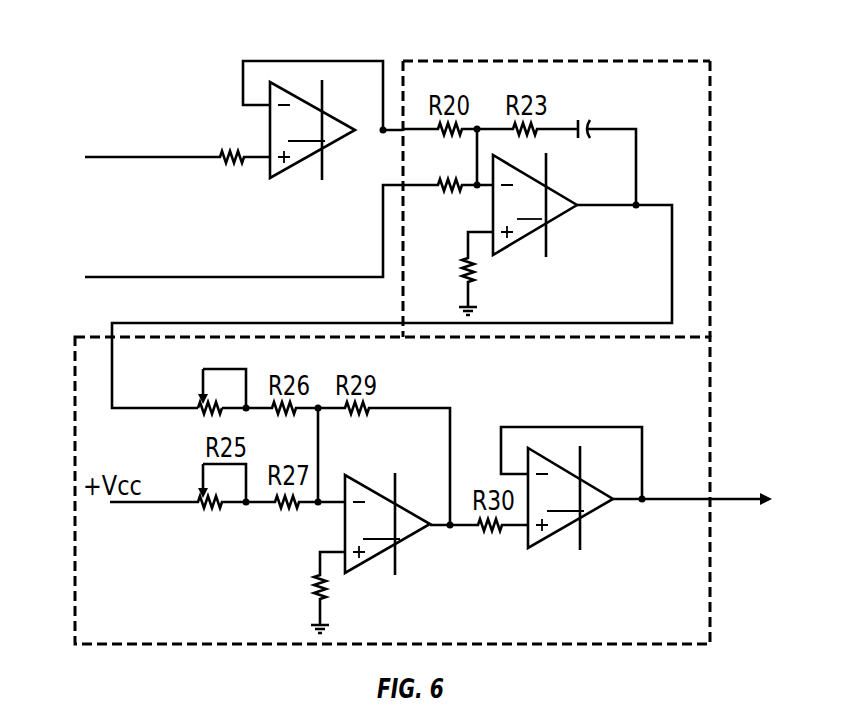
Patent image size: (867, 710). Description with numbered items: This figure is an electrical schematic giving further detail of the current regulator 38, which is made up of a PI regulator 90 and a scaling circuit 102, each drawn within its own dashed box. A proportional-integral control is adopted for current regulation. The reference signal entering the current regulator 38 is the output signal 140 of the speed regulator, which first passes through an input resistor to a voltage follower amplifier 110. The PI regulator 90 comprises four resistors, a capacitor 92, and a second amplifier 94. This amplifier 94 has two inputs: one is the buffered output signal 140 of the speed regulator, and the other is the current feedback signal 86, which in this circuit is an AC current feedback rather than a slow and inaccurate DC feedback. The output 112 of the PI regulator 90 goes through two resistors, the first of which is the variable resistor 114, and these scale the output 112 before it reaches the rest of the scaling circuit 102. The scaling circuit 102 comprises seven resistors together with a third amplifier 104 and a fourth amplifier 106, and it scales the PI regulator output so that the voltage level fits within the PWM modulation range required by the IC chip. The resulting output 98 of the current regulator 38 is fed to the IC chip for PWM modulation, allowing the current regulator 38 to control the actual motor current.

The current regulator 38 is at (528, 53).
The current feedback signal 86 is at (143, 277).
The PI regulator 90 is at (710, 125).
The capacitor C2 92 is at (592, 128).
The amplifier Amp 7 94 is at (502, 234).
The output of current regulator 98 is at (733, 498).
The scaling circuit 102 is at (710, 582).
The amplifier Amp 8 104 is at (353, 553).
The amplifier Amp 9 106 is at (573, 502).
The amplifier Amp 6 110 is at (315, 135).
The output of PI regulator 112 is at (672, 273).
The resistor R24 114 is at (203, 417).
The output signal of speed regulator 140 is at (143, 157).